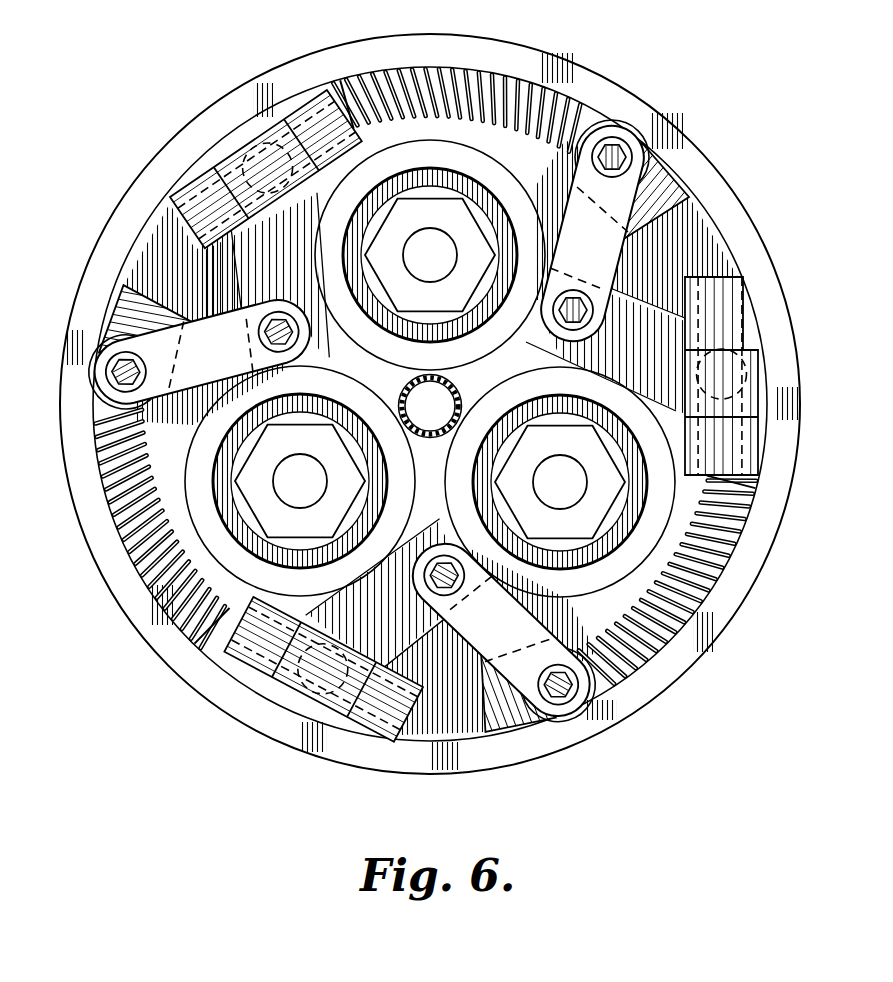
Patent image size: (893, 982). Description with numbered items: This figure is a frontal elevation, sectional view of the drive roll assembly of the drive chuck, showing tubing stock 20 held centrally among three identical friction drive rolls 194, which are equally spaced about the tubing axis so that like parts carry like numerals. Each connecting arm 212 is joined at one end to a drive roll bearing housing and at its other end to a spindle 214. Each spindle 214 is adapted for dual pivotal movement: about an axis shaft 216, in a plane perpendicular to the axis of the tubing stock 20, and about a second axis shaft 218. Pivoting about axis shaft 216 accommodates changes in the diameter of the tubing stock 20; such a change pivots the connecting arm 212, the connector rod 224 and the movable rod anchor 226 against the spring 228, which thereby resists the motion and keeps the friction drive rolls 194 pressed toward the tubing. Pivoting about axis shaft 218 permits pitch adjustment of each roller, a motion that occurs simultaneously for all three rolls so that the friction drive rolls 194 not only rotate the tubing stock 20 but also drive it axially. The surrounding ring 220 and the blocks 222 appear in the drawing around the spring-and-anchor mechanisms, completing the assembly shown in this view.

The tubing stock 20 is at (452, 390).
The friction drive rolls 194 is at (448, 160).
The connecting arm 212 is at (607, 291).
The spindle 214 is at (215, 165).
The axis shaft 216 is at (318, 652).
The axis shaft 218 is at (388, 712).
The housing ring 220 is at (128, 598).
The abutment block 222 is at (303, 100).
The connector rod 224 is at (607, 255).
The movable rod anchor 226 is at (670, 190).
The spring 228 is at (470, 78).